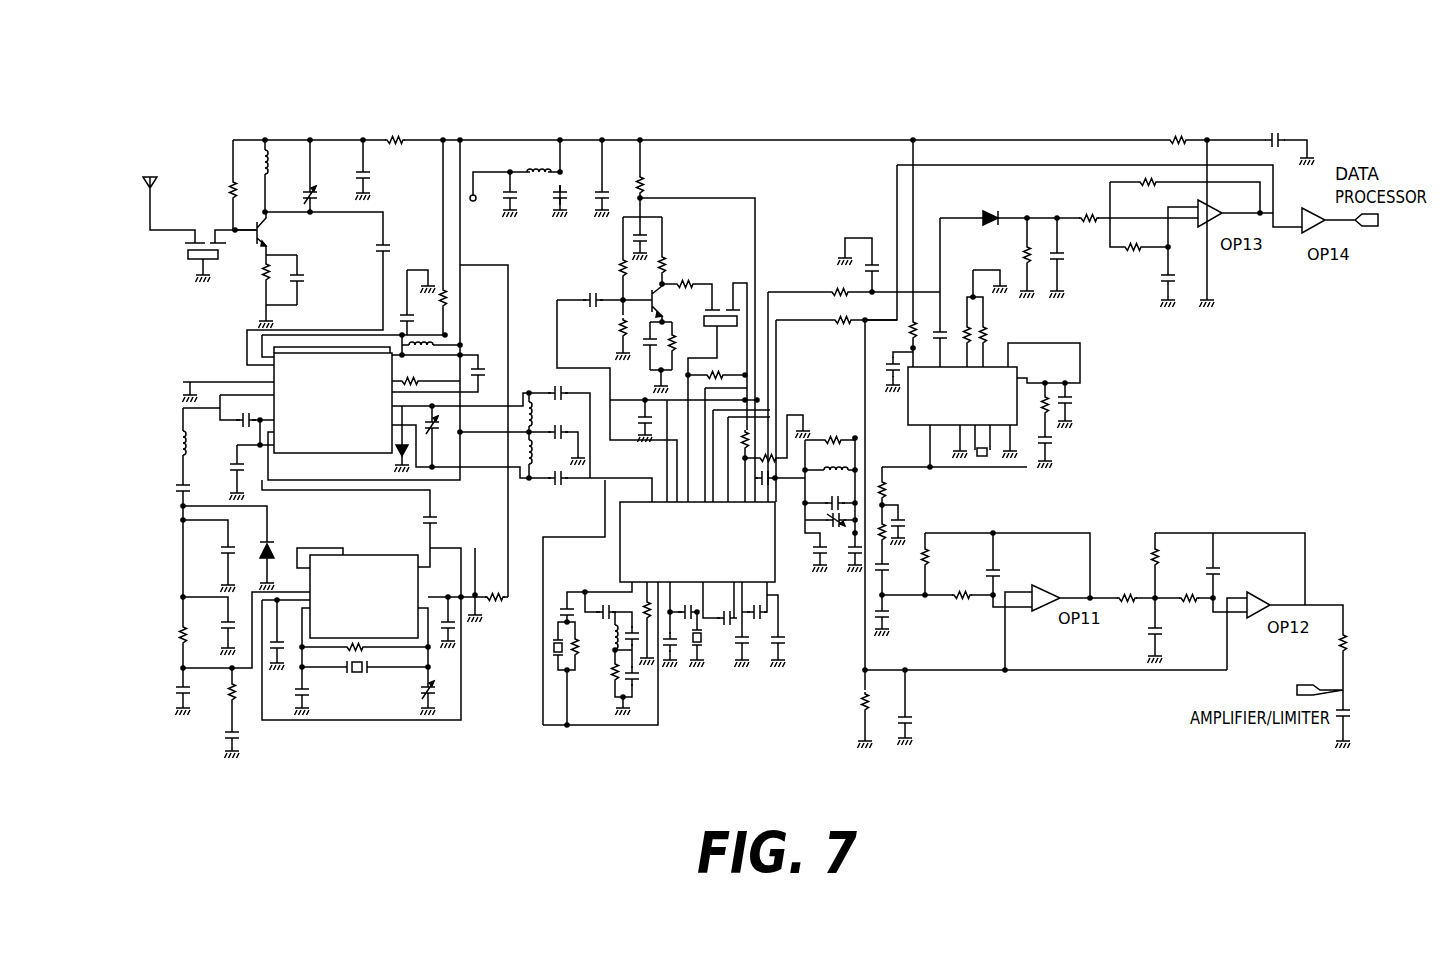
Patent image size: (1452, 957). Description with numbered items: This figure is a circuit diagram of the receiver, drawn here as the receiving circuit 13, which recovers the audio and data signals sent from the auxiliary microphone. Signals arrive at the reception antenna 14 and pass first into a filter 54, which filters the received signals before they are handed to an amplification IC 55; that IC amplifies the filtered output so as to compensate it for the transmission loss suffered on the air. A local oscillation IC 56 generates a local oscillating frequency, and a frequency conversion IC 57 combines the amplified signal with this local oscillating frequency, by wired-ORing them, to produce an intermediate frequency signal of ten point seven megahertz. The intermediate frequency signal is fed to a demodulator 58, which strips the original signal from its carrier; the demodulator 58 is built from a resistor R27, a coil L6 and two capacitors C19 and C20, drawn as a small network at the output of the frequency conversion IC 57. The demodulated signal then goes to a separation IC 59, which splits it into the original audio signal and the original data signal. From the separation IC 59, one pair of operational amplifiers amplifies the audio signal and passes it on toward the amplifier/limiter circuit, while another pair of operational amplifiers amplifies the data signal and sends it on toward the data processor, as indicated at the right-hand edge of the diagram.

The receiving circuit 13 is at (146, 358).
The reception antenna 14 is at (147, 186).
The filter 54 is at (180, 268).
The amplification IC 55 is at (318, 352).
The local oscillation IC 56 is at (343, 548).
The frequency conversion IC 57 is at (776, 573).
The demodulator 58 is at (821, 460).
The separation IC 59 is at (1020, 378).
The resistor R27 is at (835, 421).
The coil L6 is at (832, 457).
The capacitor C19 is at (836, 484).
The capacitor C20 is at (796, 547).